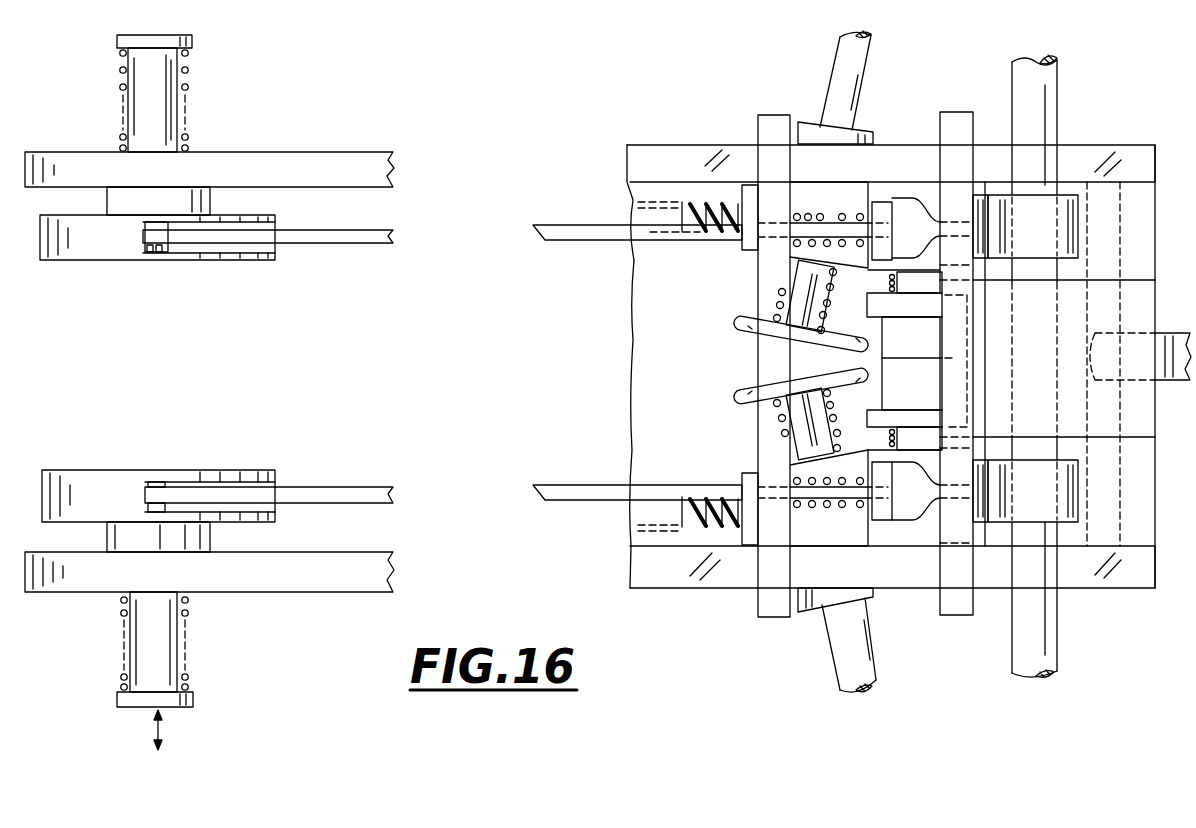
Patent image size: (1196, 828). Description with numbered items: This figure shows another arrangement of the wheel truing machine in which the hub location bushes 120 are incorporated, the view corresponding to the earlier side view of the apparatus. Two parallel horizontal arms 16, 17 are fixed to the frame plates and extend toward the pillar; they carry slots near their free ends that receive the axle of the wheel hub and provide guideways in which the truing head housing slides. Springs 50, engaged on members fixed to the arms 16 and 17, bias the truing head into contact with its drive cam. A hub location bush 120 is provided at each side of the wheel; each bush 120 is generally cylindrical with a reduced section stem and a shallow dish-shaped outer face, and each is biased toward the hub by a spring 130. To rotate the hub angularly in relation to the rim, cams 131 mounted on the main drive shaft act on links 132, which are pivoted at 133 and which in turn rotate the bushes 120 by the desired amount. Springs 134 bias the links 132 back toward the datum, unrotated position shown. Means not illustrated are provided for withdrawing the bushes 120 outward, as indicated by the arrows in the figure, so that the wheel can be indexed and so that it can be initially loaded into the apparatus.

The horizontal arm 16 is at (665, 573).
The horizontal arm 17 is at (650, 160).
The spring 50 is at (702, 235).
The hub location bush 120 is at (277, 222).
The spring 130 is at (190, 133).
The cam 131 is at (1067, 203).
The link 132 is at (362, 235).
The pivot 133 is at (155, 238).
The spring 134 is at (822, 214).